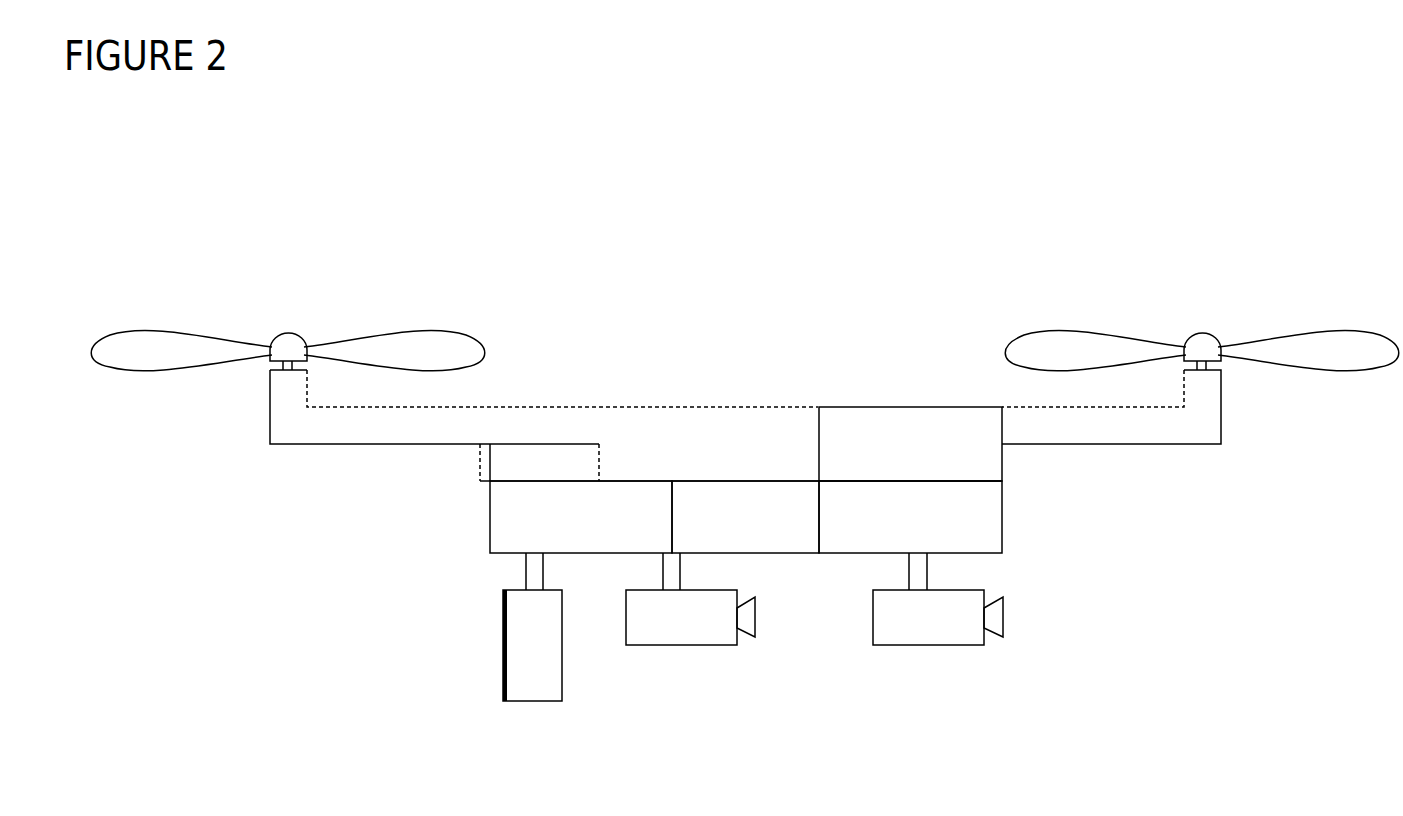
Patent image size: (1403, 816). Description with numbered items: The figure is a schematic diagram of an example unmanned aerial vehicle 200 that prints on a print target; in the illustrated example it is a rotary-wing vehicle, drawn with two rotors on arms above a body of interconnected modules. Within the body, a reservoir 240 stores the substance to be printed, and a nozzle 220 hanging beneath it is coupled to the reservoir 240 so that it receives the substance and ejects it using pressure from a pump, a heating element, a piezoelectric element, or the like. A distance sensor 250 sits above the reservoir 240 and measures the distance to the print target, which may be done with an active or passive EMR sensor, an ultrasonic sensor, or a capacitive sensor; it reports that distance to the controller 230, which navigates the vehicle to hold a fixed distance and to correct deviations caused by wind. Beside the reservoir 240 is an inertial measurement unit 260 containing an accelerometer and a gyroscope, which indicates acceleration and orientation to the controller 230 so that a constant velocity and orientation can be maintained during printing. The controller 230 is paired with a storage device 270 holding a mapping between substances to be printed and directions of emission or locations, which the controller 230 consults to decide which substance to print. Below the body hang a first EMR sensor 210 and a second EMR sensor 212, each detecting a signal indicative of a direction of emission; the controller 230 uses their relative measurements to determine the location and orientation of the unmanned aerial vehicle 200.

The unmanned aerial vehicle 200 is at (1218, 156).
The EMR sensor 210 is at (952, 633).
The second EMR sensor 212 is at (705, 634).
The nozzle 220 is at (557, 659).
The controller 230 is at (934, 550).
The reservoir 240 is at (604, 550).
The distance sensor 250 is at (568, 476).
The inertial measurement unit (IMU) 260 is at (770, 548).
The storage device 270 is at (934, 476).